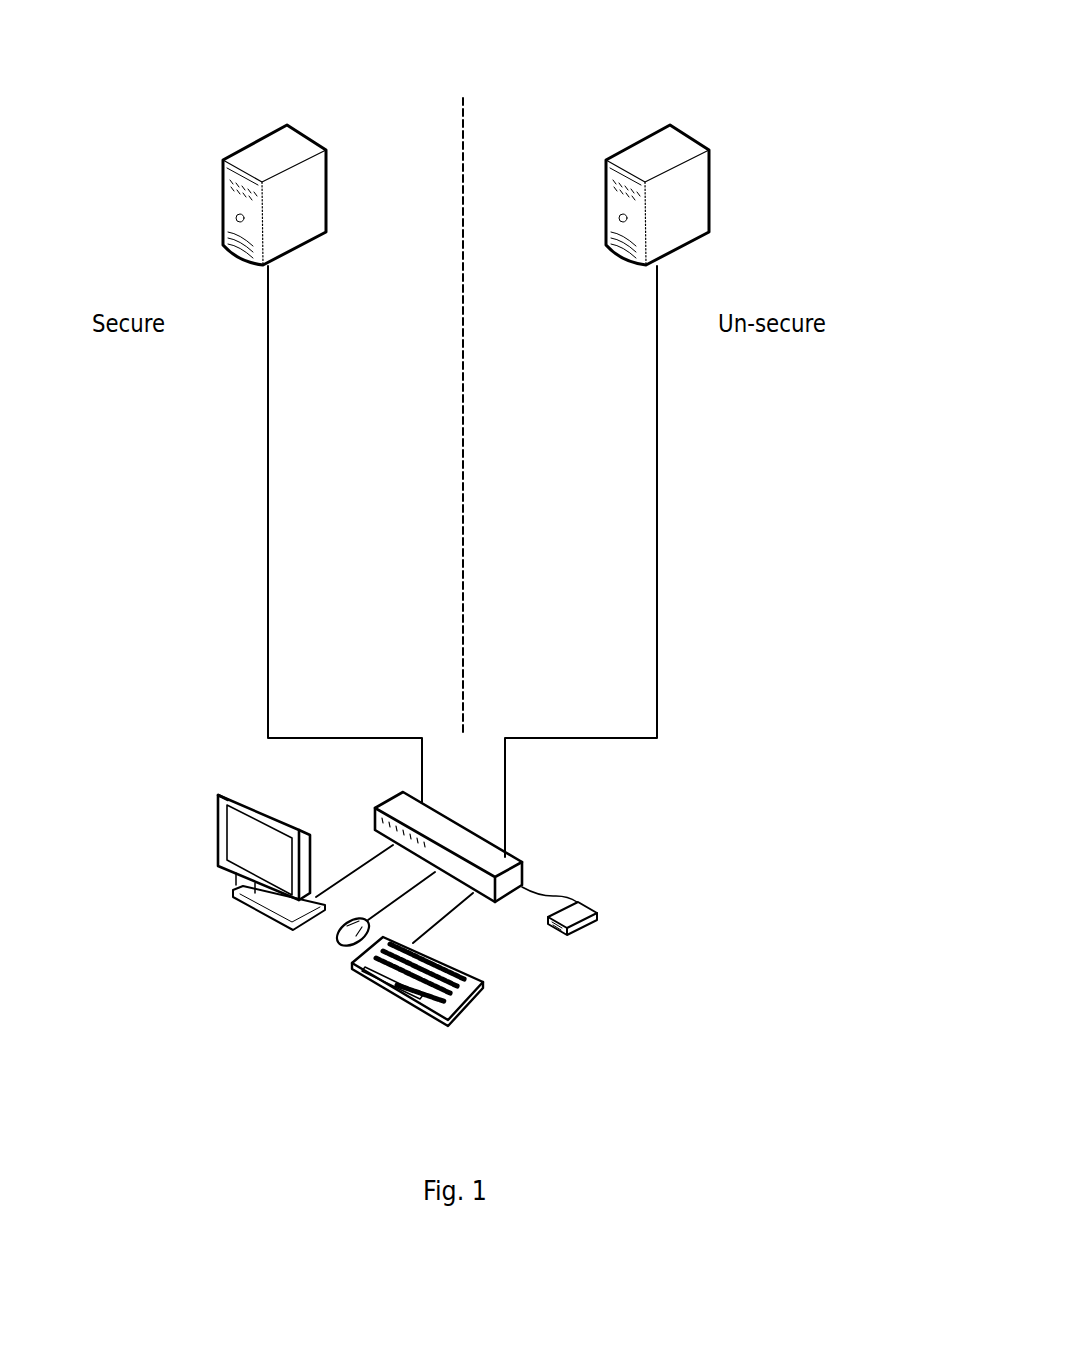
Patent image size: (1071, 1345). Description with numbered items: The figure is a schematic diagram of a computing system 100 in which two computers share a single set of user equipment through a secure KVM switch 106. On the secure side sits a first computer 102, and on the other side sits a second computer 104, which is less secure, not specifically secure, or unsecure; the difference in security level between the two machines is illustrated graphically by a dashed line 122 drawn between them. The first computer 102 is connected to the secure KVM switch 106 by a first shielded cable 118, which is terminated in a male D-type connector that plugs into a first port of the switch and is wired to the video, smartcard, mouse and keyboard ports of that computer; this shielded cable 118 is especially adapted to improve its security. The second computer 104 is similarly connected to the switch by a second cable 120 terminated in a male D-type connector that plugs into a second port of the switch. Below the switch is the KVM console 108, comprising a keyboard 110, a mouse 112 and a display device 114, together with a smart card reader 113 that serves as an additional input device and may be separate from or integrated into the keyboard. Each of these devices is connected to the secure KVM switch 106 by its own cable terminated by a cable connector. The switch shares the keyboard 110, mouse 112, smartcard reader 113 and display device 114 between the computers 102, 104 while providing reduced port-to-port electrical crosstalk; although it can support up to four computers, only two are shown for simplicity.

The computing system 100 is at (628, 85).
The first computer 102 is at (326, 193).
The second computer 104 is at (709, 193).
The secure KVM switch 106 is at (513, 852).
The KVM console 108 is at (205, 985).
The keyboard 110 is at (486, 977).
The mouse 112 is at (337, 940).
The smart card reader 113 is at (597, 920).
The display device 114 is at (233, 792).
The first shielded cable 118 is at (269, 470).
The second cable 120 is at (658, 470).
The dashed line 122 is at (463, 163).